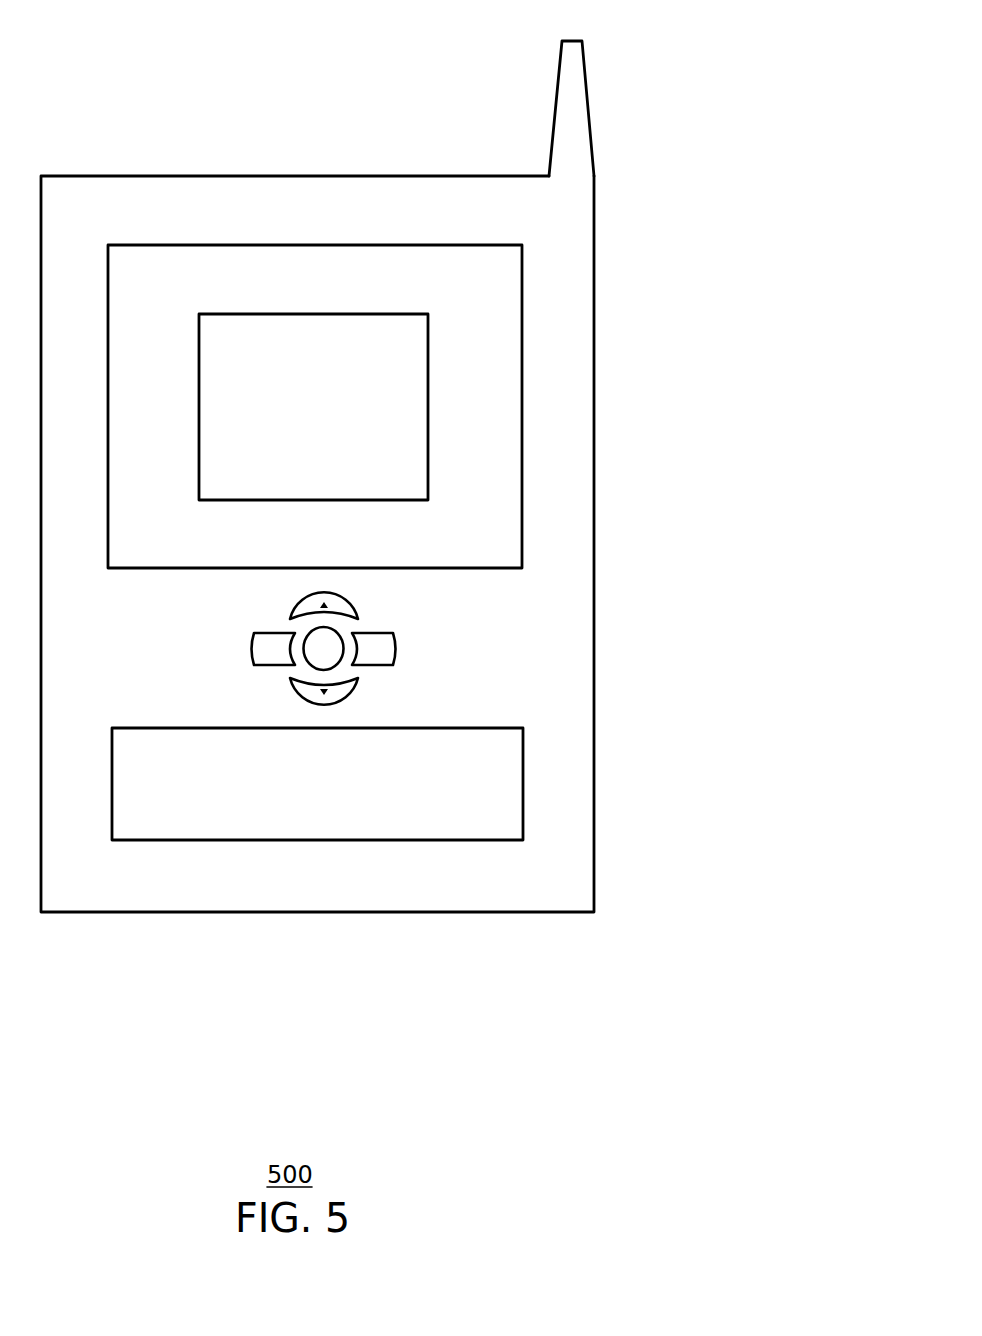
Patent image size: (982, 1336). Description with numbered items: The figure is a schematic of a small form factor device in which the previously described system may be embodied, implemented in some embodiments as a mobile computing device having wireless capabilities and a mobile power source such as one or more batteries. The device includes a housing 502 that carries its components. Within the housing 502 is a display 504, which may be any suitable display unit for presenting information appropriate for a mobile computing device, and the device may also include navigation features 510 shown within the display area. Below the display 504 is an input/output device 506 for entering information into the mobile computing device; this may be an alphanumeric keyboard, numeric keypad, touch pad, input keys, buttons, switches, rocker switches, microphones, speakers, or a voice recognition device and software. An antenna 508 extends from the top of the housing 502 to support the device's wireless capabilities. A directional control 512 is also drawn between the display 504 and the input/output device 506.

The housing 502 is at (594, 525).
The display 504 is at (462, 245).
The input/output (I/O) device 506 is at (523, 755).
The antenna 508 is at (558, 86).
The navigation features 510 is at (373, 314).
The navigation control 512 is at (410, 633).